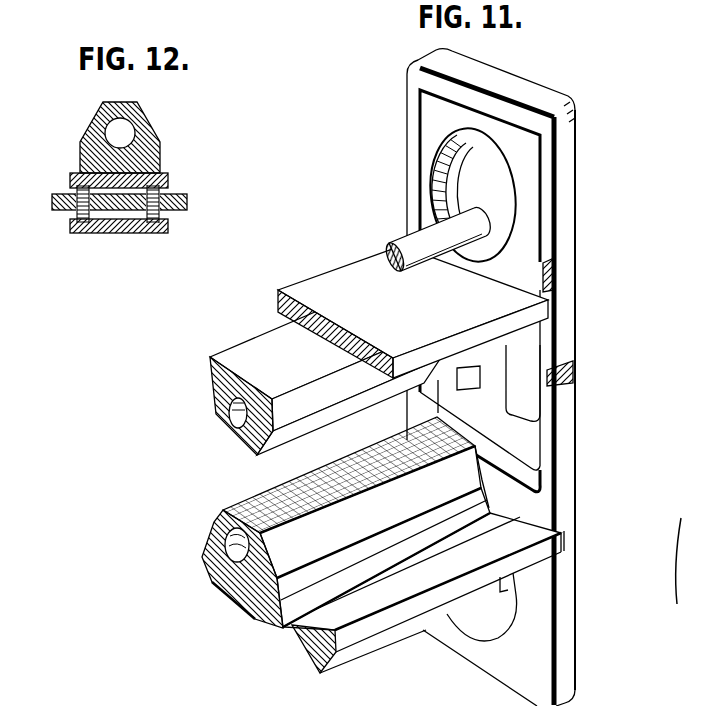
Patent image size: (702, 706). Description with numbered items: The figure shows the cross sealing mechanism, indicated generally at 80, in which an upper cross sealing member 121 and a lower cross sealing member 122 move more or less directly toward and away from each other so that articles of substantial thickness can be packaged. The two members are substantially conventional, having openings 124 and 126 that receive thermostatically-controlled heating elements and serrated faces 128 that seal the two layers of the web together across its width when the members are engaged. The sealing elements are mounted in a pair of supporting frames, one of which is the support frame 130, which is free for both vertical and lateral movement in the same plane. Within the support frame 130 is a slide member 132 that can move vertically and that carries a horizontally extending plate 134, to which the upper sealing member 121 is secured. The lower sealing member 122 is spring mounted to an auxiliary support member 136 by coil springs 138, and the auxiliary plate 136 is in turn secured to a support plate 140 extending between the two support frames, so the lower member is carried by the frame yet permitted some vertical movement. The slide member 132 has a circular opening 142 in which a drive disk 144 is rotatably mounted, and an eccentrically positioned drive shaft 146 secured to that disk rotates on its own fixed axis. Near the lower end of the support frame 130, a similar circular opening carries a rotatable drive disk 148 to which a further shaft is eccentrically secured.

In FIG. 11, the clamping assembly 80 is at (600, 120).
In FIG. 11, the upper cross sealing member 121 is at (295, 370).
In FIG. 11, the lower cross sealing member 122 is at (318, 522).
In FIG. 11, the opening 124 is at (232, 424).
In FIG. 11, the opening 126 is at (205, 568).
In FIG. 11, the serrated faces 128 is at (278, 490).
In FIG. 11, the supporting frame 130 is at (577, 197).
In FIG. 11, the slide member 132 is at (425, 118).
In FIG. 11, the horizontally extending plate 134 is at (333, 271).
In FIG. 12, the auxiliary support member 136 is at (169, 228).
In FIG. 11, the auxiliary support member 136 is at (318, 656).
In FIG. 12, the coil springs 138 is at (74, 186).
In FIG. 12, the support plate 140 is at (188, 202).
In FIG. 11, the support plate 140 is at (385, 627).
In FIG. 11, the circular opening 142 is at (432, 163).
In FIG. 11, the drive disk 144 is at (487, 160).
In FIG. 11, the drive shaft 146 is at (398, 243).
In FIG. 11, the drive disk 148 is at (491, 637).